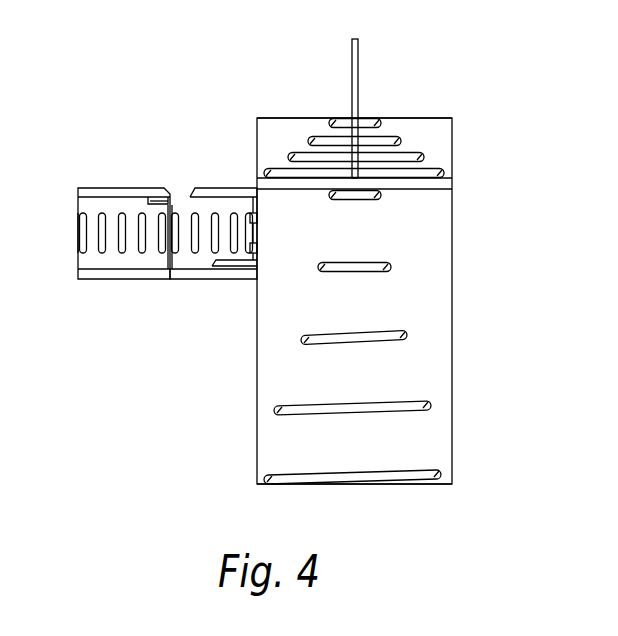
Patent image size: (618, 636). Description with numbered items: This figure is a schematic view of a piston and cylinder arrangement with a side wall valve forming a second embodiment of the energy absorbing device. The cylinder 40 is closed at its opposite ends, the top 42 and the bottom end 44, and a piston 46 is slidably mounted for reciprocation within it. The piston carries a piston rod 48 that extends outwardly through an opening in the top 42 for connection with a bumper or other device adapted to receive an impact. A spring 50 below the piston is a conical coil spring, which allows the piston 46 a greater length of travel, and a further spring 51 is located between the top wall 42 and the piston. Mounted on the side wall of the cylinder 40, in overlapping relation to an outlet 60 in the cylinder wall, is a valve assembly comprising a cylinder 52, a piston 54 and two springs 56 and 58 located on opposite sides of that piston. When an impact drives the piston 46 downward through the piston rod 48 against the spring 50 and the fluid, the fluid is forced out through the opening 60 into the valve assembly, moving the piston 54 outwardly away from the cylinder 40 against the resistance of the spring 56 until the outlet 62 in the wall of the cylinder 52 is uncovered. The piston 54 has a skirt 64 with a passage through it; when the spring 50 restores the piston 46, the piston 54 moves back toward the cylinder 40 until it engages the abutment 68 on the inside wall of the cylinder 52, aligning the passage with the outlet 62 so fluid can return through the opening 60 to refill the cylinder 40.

The cylinder 40 is at (452, 212).
The top 42 is at (433, 117).
The opposite end 44 is at (410, 487).
The piston 46 is at (440, 183).
The piston rod 48 is at (350, 58).
The spring 50 is at (400, 337).
The spring 51 is at (400, 147).
The cylinder 52 is at (98, 188).
The piston 54 is at (172, 267).
The spring 56 is at (133, 248).
The spring 58 is at (215, 200).
The outlet 60 is at (257, 222).
The outlet 62 is at (162, 190).
The skirt 64 is at (143, 215).
The abutment 68 is at (210, 279).